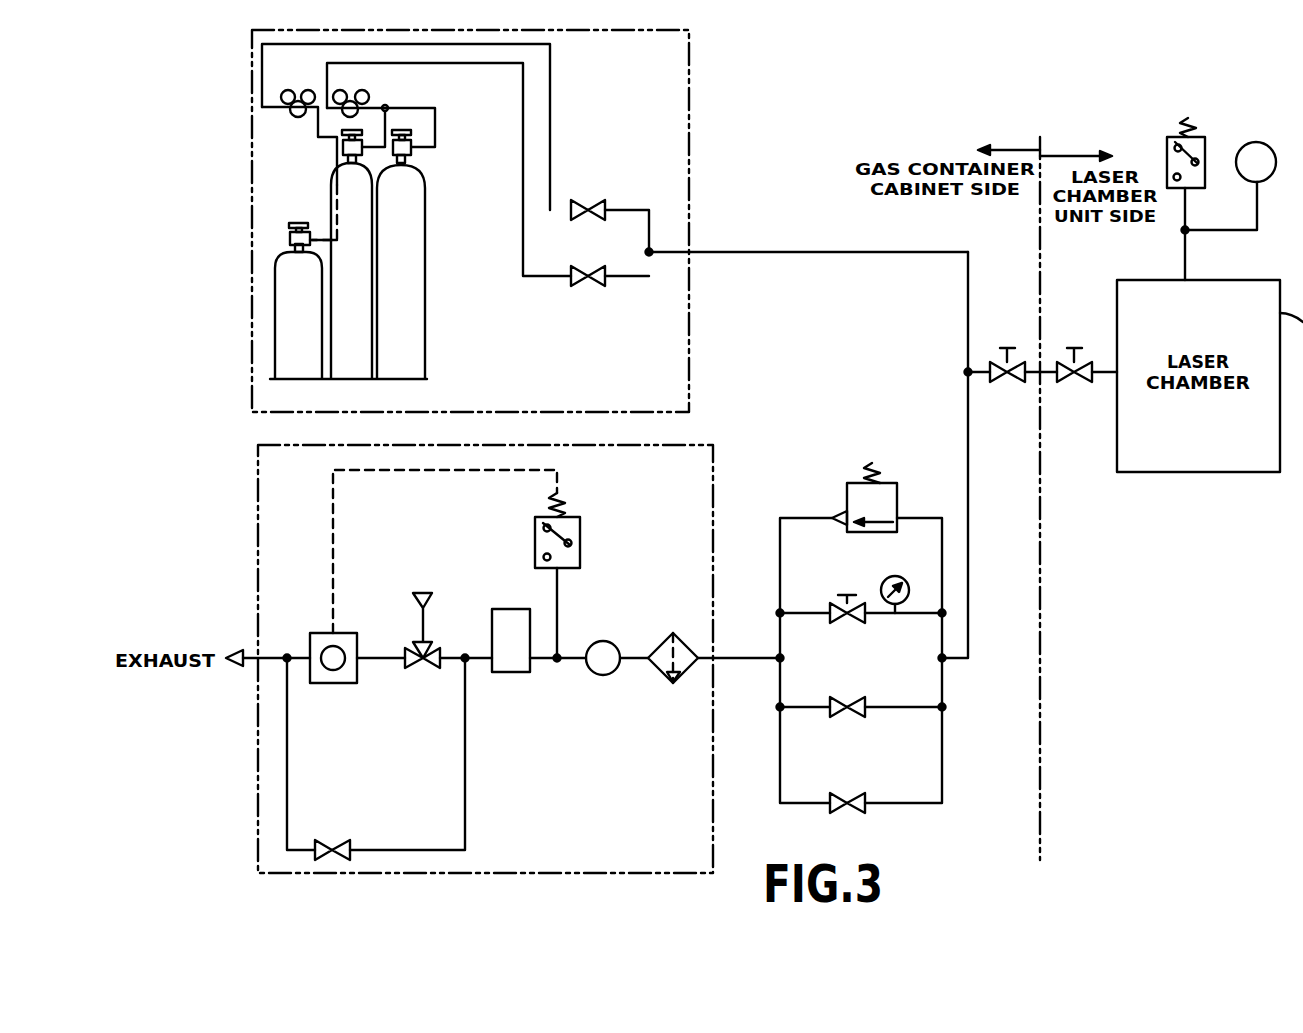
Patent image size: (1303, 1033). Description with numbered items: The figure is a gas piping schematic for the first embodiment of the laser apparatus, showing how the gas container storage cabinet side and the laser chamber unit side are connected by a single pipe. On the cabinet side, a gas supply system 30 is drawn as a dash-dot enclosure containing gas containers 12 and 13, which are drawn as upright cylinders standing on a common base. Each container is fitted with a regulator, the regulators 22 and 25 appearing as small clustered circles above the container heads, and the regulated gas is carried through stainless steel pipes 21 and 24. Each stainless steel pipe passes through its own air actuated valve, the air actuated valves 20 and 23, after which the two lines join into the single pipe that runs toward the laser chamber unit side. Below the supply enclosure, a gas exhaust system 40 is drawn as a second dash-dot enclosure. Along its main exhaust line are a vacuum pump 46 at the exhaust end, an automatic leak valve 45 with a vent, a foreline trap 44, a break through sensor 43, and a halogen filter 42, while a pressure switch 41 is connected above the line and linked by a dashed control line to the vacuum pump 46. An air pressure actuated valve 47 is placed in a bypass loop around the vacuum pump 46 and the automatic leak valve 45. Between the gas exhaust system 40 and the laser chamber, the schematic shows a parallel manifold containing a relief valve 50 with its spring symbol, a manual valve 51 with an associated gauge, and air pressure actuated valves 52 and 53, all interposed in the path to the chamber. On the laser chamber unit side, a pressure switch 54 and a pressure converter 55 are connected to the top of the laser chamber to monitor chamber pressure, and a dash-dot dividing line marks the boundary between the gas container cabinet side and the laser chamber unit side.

The gas container 12 is at (413, 318).
The gas container 13 is at (277, 355).
The air actuated valve 20 is at (590, 202).
The stainless steel pipe 21 is at (553, 85).
The regulator 22 is at (288, 90).
The air actuated valve 23 is at (582, 283).
The stainless steel pipe 24 is at (522, 127).
The regulator 25 is at (367, 98).
The gas supply system 30 is at (689, 85).
The gas exhaust system 40 is at (713, 480).
The pressure switch 41 is at (582, 535).
The halogen filter 42 is at (685, 673).
The break through sensor 43 is at (607, 675).
The foreline trap 44 is at (517, 672).
The automatic leak valve 45 is at (430, 667).
The vacuum pump 46 is at (337, 683).
The air pressure actuated valve 47 is at (350, 840).
The relief valve 50 is at (890, 495).
The manual valve 51 is at (853, 595).
The air pressure actuated valve 52 is at (860, 703).
The air pressure actuated valve 53 is at (860, 797).
The pressure switch 54 is at (1197, 133).
The pressure converter 55 is at (1272, 146).